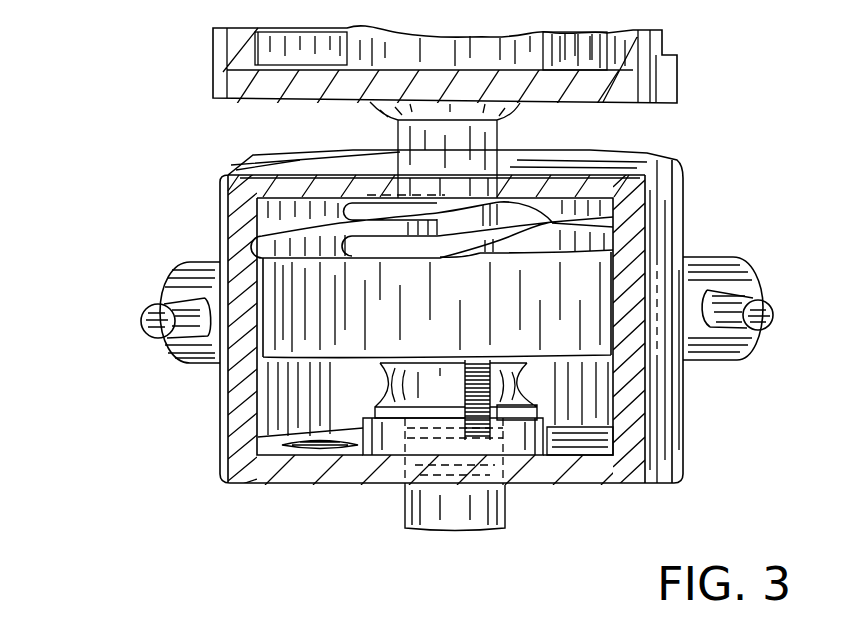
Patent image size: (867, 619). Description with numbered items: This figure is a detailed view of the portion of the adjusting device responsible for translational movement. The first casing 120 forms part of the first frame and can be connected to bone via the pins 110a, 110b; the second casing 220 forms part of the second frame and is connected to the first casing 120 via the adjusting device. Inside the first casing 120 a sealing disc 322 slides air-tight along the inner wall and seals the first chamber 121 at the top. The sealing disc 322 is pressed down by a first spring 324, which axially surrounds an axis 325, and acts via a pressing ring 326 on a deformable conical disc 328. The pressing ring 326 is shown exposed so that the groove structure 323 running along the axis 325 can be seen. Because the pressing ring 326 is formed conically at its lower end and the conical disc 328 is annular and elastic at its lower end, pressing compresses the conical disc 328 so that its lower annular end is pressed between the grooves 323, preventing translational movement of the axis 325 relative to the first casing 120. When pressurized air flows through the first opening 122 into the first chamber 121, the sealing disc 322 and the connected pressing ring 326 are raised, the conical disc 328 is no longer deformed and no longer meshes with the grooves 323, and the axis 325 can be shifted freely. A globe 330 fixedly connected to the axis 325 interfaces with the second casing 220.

The pin 110a is at (152, 322).
The pin 110b is at (760, 318).
The first casing 120 is at (670, 422).
The first chamber 121 is at (293, 395).
The first opening 122 is at (313, 447).
The second casing 220 is at (240, 73).
The sealing disc 322 is at (582, 292).
The groove structure 323 is at (435, 458).
The first spring 324 is at (556, 212).
The axis 325 is at (292, 141).
The pressing ring 326 is at (513, 382).
The conical disc 328 is at (525, 447).
The globe 330 is at (347, 55).